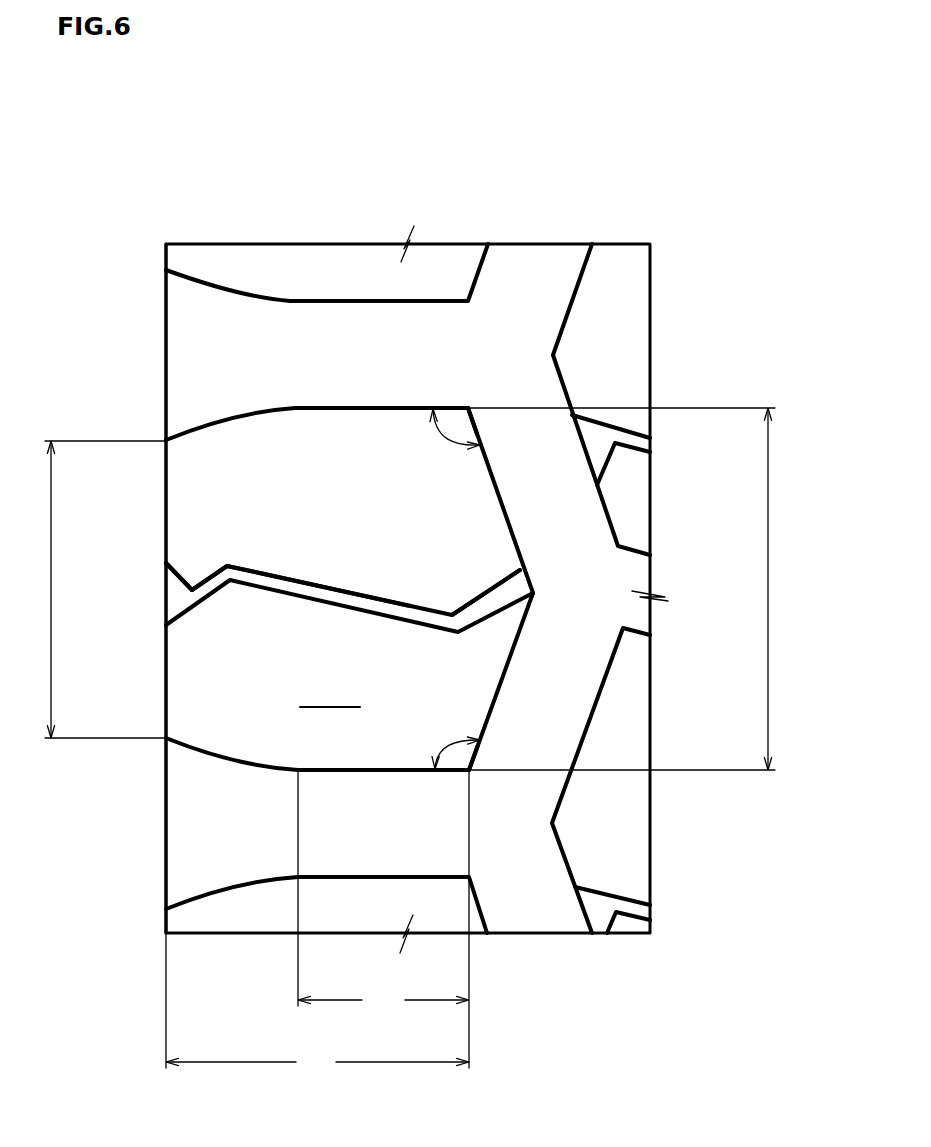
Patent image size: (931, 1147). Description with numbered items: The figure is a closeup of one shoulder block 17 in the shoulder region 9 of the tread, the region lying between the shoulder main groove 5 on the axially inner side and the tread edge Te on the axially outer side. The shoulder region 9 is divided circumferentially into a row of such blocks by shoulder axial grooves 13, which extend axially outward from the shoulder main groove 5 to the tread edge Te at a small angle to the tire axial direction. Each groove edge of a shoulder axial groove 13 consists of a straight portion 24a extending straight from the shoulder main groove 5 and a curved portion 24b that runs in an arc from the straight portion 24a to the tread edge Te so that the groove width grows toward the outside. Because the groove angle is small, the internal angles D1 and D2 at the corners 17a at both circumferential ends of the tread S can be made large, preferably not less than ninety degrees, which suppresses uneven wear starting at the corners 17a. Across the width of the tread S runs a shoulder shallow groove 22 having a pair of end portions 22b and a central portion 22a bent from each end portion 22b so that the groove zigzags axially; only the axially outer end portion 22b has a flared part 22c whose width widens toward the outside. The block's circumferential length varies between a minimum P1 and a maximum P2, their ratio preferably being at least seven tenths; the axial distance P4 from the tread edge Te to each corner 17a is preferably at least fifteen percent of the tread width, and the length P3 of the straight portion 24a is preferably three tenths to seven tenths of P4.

The tread edge Te is at (166, 291).
The shoulder region 9 is at (303, 265).
The shoulder main groove 5 is at (540, 280).
The shoulder axial groove 13 is at (449, 356).
The shoulder block 17 is at (369, 435).
The corner 17a is at (462, 420).
The straight portion 24a is at (413, 408).
The curved portion 24b is at (216, 423).
The shoulder shallow groove 22 is at (385, 607).
The central portion 22a is at (290, 587).
The end portion 22b is at (213, 585).
The flared part 22c is at (172, 582).
The tread S is at (338, 694).
The internal angle D1 is at (445, 440).
The internal angle D2 is at (447, 738).
The minimum circumferential length P1 is at (101, 589).
The maximum circumferential length P2 is at (629, 589).
The length of straight portion P3 is at (383, 919).
The axial distance P4 is at (317, 1005).